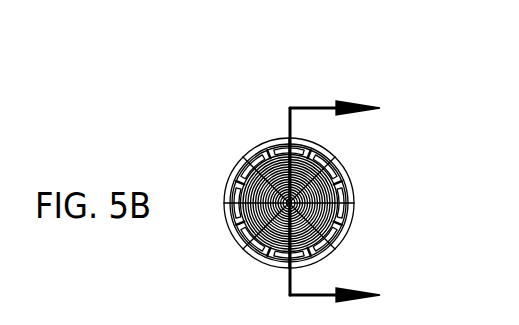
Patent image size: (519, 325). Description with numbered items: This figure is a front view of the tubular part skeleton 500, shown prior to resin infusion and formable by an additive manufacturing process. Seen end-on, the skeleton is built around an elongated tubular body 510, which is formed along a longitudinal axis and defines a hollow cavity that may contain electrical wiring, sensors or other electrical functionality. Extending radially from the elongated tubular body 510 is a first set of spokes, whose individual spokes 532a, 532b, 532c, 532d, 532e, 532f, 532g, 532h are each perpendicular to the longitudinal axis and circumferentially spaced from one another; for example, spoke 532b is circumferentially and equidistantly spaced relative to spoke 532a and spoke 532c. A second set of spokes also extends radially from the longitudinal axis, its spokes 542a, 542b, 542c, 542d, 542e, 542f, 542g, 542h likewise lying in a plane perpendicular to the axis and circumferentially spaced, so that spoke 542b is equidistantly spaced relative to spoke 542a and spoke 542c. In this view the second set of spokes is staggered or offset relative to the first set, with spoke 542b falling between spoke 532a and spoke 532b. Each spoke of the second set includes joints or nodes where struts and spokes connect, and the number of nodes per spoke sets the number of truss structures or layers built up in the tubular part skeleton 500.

The tubular part skeleton 500 is at (216, 98).
The elongated tubular body 510 is at (415, 158).
The spoke 532a is at (281, 137).
The spoke 532b is at (341, 158).
The spoke 532c is at (355, 203).
The spoke 532d is at (335, 251).
The spoke 532e is at (283, 271).
The spoke 532f is at (245, 248).
The spoke 532g is at (226, 203).
The spoke 532h is at (245, 153).
The spoke 542a is at (269, 144).
The spoke 542b is at (317, 142).
The spoke 542c is at (355, 179).
The spoke 542d is at (351, 226).
The spoke 542e is at (315, 263).
The spoke 542f is at (267, 264).
The spoke 542g is at (237, 225).
The spoke 542h is at (237, 179).